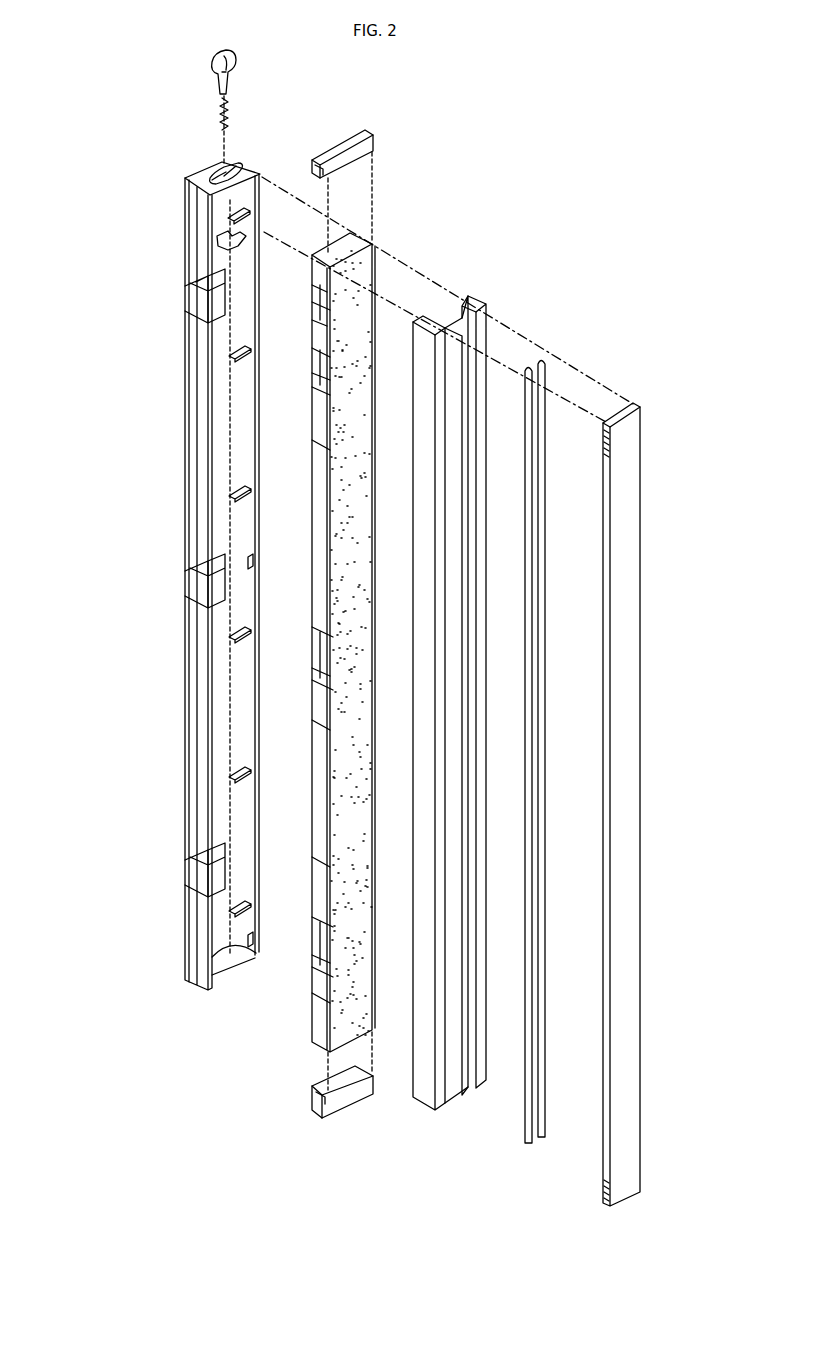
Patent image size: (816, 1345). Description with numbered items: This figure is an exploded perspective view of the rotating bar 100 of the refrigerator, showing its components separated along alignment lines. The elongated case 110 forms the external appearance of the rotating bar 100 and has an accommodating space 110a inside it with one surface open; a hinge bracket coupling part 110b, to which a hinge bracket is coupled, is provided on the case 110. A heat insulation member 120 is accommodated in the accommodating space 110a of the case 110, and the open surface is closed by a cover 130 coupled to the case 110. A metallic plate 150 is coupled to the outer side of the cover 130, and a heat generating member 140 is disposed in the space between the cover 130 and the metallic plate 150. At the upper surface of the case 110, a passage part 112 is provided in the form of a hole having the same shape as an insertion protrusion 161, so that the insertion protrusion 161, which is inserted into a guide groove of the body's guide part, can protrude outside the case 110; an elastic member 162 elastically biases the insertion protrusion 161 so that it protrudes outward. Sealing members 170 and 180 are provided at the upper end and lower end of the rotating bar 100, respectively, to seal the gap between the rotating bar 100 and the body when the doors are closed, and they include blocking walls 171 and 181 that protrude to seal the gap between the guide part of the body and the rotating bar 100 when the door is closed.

The rotating bar 100 is at (118, 172).
The case 110 is at (192, 437).
The accommodating space 110a is at (222, 530).
The hinge bracket coupling part 110b is at (210, 597).
The passage part 112 is at (224, 176).
The heat insulation member 120 is at (368, 243).
The cover 130 is at (470, 297).
The heat generating member 140 is at (528, 362).
The metallic plate 150 is at (638, 404).
The insertion protrusion 161 is at (210, 68).
The elastic member 162 is at (218, 112).
The sealing member 170 is at (338, 130).
The blocking wall 171 is at (372, 136).
The sealing member 180 is at (355, 1124).
The blocking wall 181 is at (322, 1122).